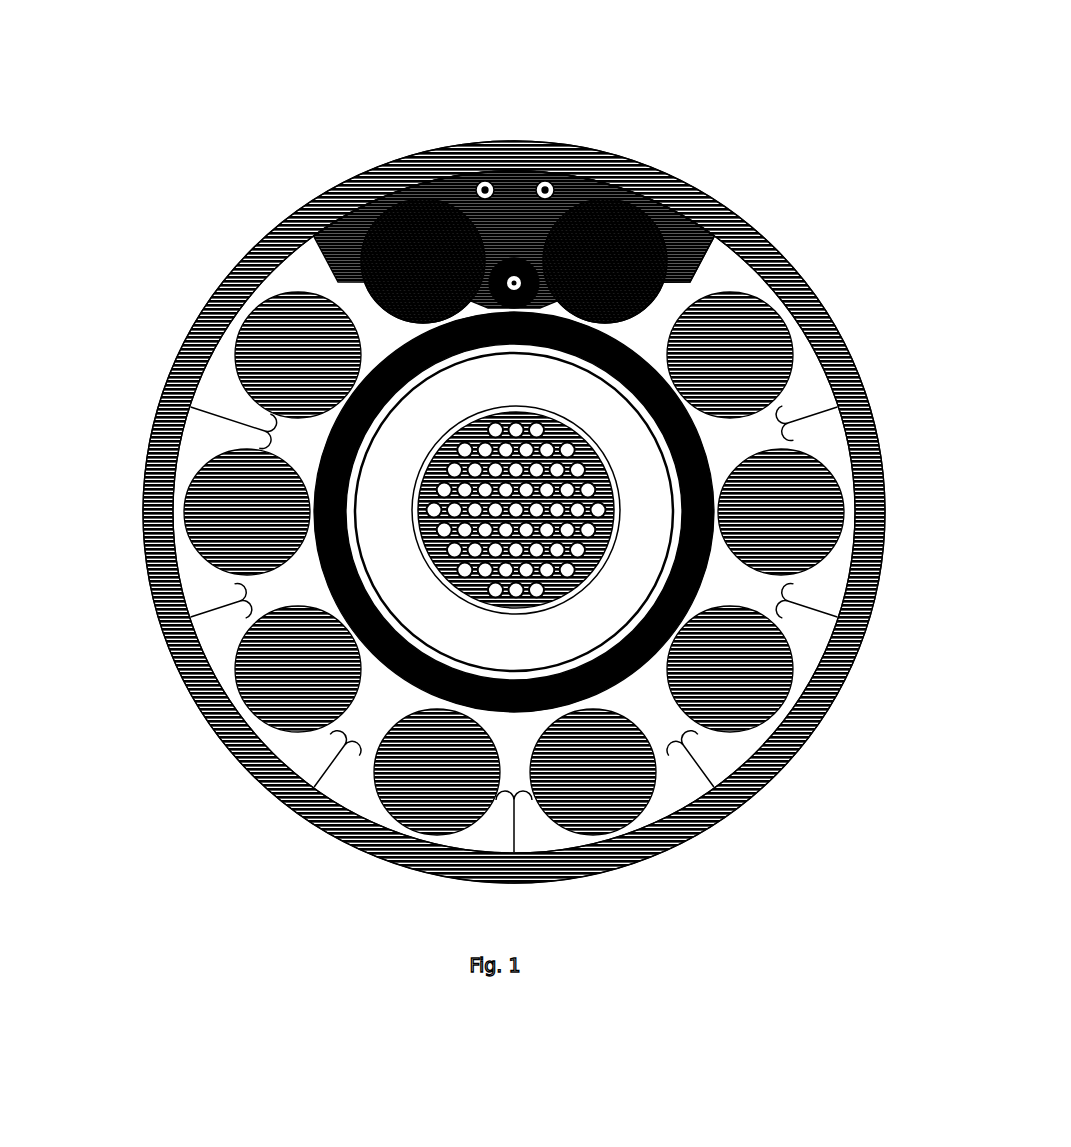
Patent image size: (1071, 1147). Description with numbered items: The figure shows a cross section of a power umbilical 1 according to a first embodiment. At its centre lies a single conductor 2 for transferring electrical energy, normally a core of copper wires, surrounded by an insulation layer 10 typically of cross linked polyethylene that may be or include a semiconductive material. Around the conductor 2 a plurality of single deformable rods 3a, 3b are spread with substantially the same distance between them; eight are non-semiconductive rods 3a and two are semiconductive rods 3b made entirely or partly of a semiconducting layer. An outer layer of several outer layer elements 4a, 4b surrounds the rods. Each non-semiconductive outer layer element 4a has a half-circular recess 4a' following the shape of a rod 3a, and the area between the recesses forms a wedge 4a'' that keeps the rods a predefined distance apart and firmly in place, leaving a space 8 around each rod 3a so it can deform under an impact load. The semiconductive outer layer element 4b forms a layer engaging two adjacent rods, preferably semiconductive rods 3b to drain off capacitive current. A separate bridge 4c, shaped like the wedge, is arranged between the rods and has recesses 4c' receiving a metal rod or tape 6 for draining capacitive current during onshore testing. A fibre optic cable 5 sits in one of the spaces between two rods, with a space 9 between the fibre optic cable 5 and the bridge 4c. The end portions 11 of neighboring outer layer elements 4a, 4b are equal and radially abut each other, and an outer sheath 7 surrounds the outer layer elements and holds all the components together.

The power umbilical 1 is at (200, 85).
The conductor 2 is at (437, 565).
The non-semiconductive single deformable rod 3a is at (745, 667).
The semiconductive single deformable rod 3b is at (660, 178).
The non-semiconductive outer layer element 4a is at (696, 787).
The recess 4a' is at (200, 341).
The wedge 4a'' is at (155, 406).
The semiconductive outer layer element 4b is at (412, 176).
The bridge 4c is at (483, 114).
The recess of the bridge 4c' is at (560, 133).
The fibre optic cable 5 is at (598, 172).
The metal rod or tape 6 is at (477, 173).
The outer sheath 7 is at (205, 678).
The space 8 is at (742, 440).
The space 9 is at (425, 175).
The insulation layer 10 is at (698, 406).
The end portion 11 is at (215, 605).